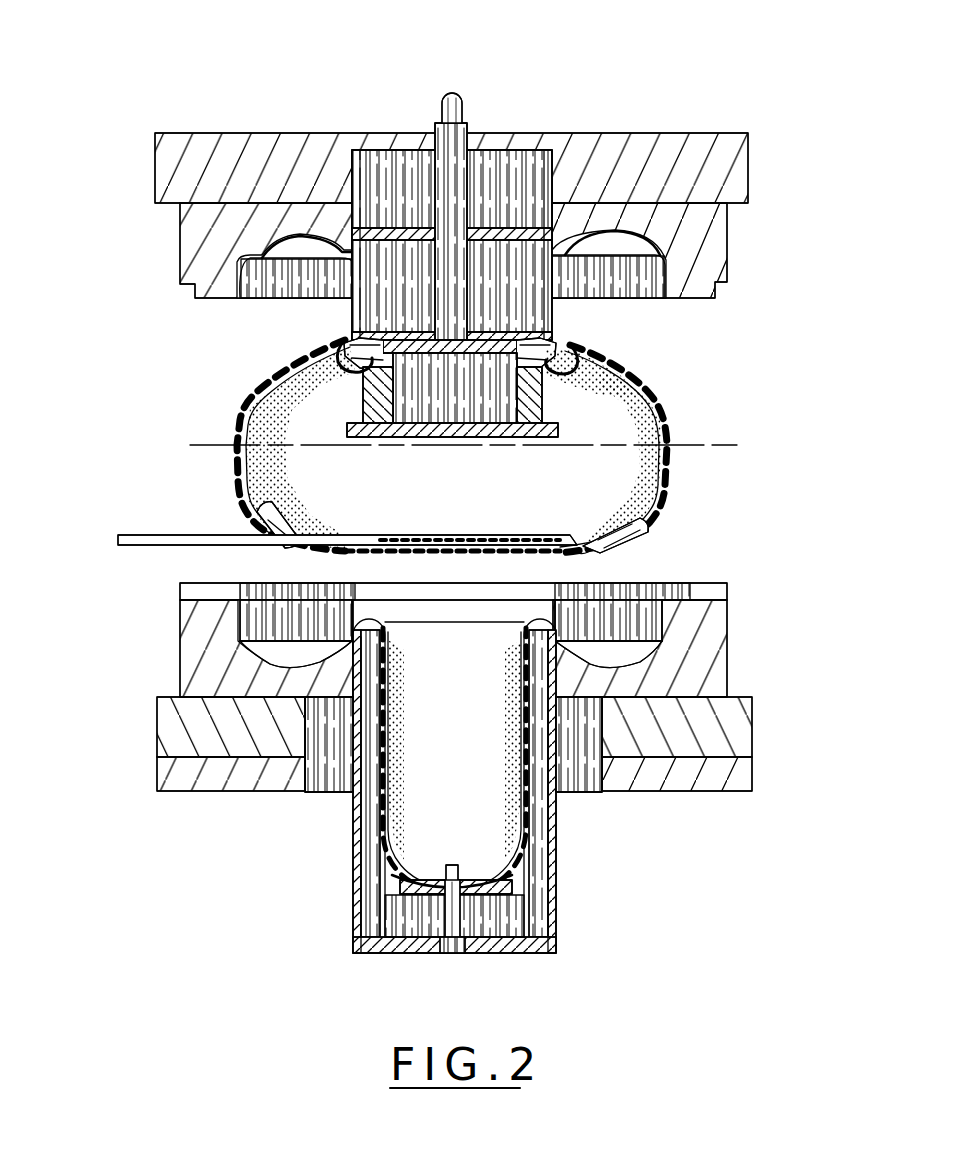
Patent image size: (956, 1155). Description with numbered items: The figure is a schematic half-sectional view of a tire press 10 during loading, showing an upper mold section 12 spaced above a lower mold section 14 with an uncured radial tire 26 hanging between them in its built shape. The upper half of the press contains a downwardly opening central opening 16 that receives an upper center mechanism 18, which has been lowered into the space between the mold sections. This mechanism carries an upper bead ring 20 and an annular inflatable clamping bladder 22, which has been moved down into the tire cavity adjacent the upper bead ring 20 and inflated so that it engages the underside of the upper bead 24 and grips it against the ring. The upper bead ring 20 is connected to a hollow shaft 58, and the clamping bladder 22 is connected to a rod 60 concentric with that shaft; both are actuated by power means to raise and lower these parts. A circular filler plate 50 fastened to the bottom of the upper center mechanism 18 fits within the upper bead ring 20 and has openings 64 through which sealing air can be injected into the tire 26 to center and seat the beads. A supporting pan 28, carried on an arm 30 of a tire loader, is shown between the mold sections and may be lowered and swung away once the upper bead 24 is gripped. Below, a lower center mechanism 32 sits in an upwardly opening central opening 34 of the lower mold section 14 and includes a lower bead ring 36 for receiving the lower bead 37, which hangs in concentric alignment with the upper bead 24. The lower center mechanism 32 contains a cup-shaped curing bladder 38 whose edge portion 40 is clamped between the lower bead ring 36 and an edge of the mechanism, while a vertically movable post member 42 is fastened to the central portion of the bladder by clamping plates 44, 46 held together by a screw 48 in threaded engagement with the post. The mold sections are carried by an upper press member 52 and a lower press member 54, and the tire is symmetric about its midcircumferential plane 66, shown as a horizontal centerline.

The tire press 10 is at (736, 86).
The upper mold section 12 is at (720, 245).
The lower mold section 14 is at (720, 625).
The central opening 16 is at (535, 160).
The upper center mechanism 18 is at (350, 312).
The upper bead ring 20 is at (560, 333).
The clamping bladder 22 is at (570, 383).
The upper bead 24 is at (575, 345).
The radial tire 26 is at (657, 400).
The supporting pan 28 is at (645, 522).
The arm 30 is at (172, 535).
The lower center mechanism 32 is at (558, 842).
The central opening 34 is at (540, 715).
The lower bead ring 36 is at (565, 637).
The lower bead 37 is at (582, 552).
The curing bladder 38 is at (383, 830).
The edge portion 40 is at (345, 600).
The post member 42 is at (455, 935).
The clamping plate 44 is at (508, 830).
The clamping plate 46 is at (520, 890).
The screw 48 is at (452, 866).
The filler plate 50 is at (493, 440).
The upper press member 52 is at (740, 160).
The lower press member 54 is at (752, 735).
The hollow shaft 58 is at (468, 135).
The rod 60 is at (455, 115).
The openings 64 is at (470, 425).
The midcircumferential plane 66 is at (215, 447).